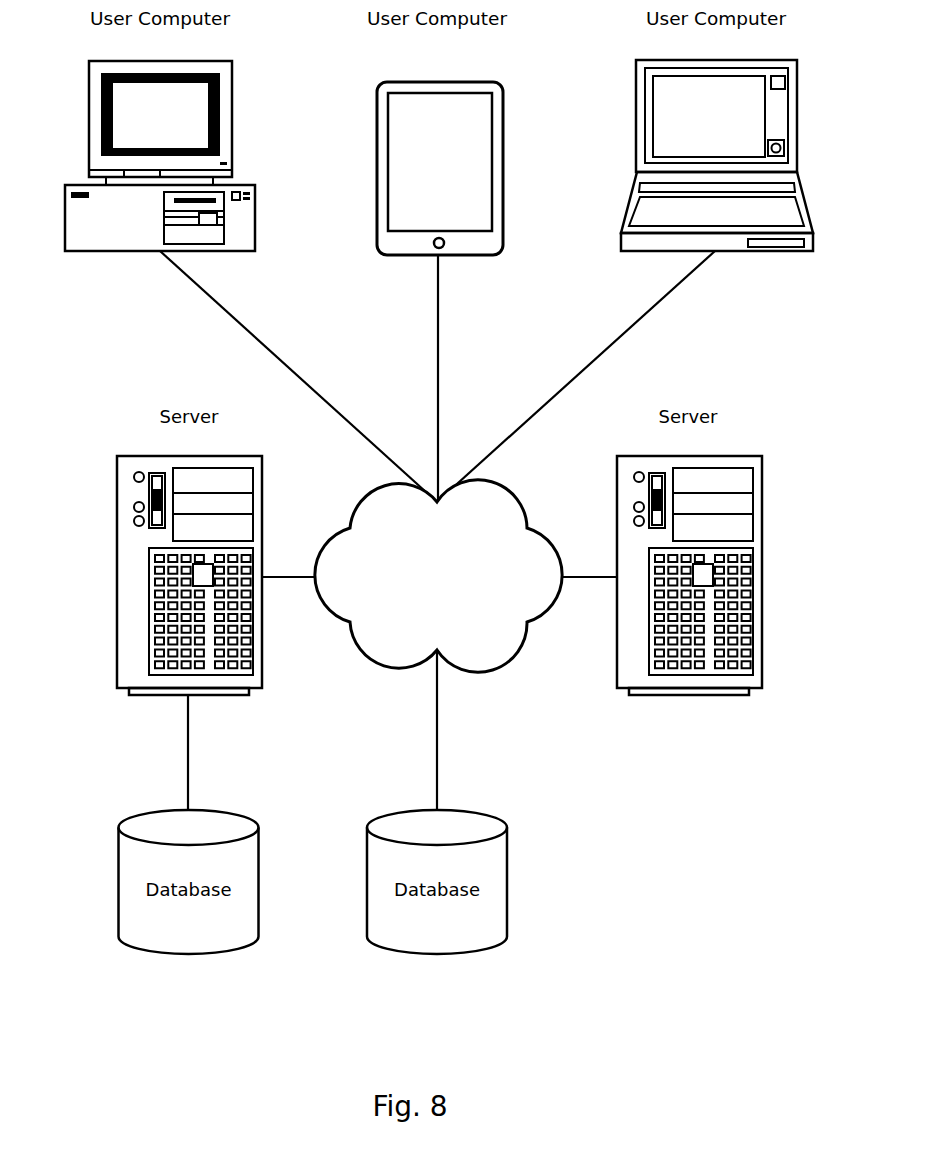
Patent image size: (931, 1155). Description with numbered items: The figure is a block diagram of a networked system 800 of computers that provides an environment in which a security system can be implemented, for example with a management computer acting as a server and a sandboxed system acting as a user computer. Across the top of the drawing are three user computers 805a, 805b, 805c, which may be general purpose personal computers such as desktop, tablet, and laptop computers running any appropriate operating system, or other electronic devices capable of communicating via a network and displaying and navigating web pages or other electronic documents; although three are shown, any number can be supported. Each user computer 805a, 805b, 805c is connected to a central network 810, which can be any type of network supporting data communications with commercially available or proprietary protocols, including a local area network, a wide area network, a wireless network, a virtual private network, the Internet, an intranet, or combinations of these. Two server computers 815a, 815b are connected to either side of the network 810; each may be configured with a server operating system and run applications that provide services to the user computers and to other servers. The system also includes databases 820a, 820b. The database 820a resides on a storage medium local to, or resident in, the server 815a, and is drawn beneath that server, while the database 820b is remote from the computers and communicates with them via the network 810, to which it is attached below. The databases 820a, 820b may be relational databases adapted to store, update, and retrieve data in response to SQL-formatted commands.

The system 800 is at (678, 1006).
The user computer 805a is at (257, 203).
The user computer 805b is at (377, 168).
The user computer 805c is at (635, 157).
The network 810 is at (472, 670).
The server computer 815a is at (117, 577).
The server computer 815b is at (760, 577).
The database 820a is at (188, 954).
The database 820b is at (437, 954).